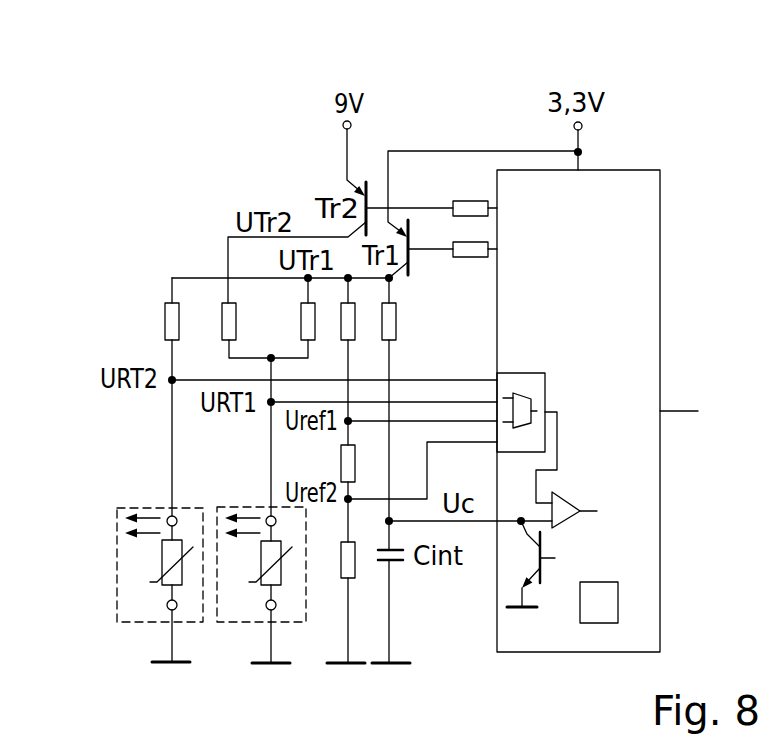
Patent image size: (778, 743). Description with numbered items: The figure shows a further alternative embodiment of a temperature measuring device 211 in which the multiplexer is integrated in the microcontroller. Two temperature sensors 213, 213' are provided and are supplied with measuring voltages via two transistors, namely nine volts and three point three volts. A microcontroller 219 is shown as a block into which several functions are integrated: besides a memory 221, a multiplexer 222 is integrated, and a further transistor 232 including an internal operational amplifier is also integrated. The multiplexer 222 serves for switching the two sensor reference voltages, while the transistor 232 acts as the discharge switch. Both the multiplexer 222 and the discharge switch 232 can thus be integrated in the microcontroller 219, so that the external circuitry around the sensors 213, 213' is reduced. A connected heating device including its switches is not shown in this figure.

The temperature measuring device 211 is at (483, 107).
The temperature sensor 213 is at (110, 585).
The temperature sensor 213' is at (256, 606).
The microcontroller 219 is at (632, 168).
The memory 221 is at (608, 602).
The multiplexer 222 is at (588, 378).
The further transistor (discharge switch) 232 is at (553, 619).